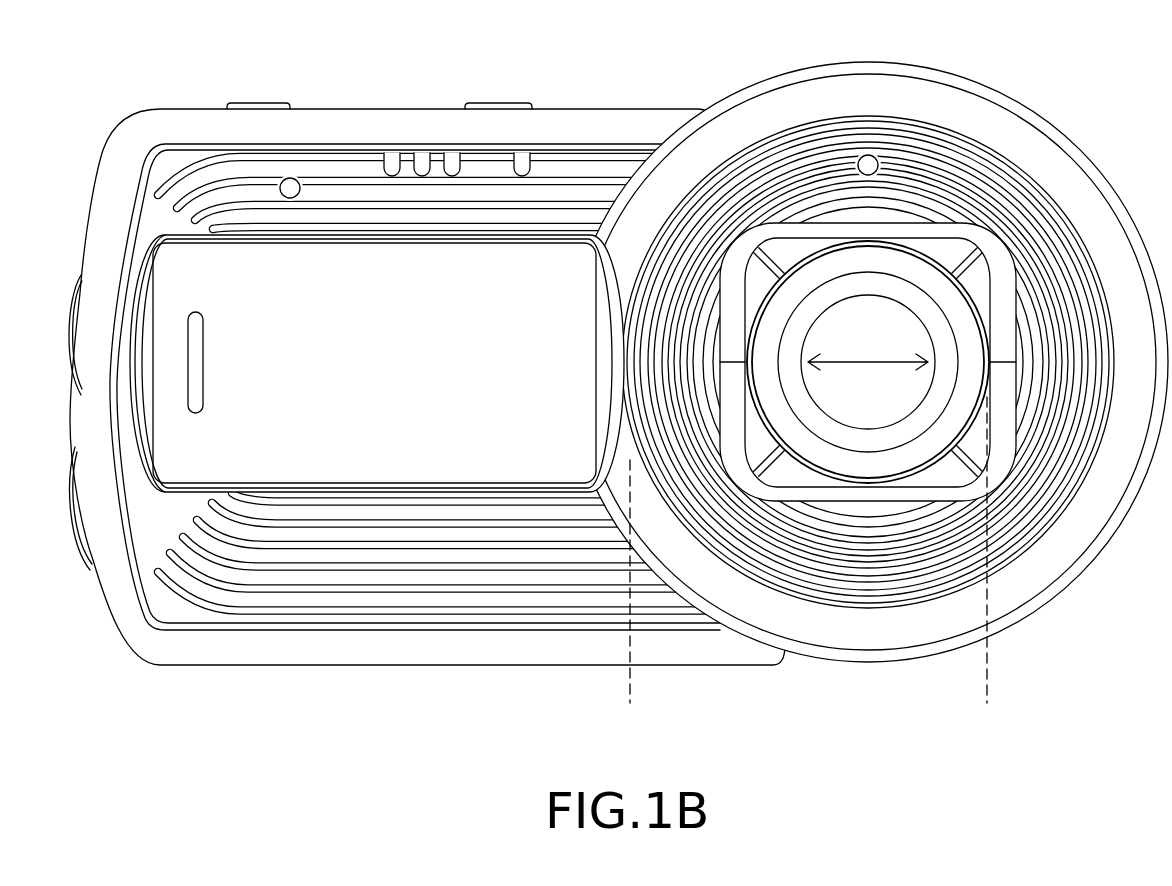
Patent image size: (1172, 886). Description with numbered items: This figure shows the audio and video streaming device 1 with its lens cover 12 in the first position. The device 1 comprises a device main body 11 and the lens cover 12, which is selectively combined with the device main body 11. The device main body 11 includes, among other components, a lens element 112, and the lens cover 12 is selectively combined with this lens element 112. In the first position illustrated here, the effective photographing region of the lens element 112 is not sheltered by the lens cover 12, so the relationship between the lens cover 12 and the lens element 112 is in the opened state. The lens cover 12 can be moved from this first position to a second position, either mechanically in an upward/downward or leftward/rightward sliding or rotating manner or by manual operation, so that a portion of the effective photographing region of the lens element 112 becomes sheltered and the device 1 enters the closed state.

The audio and video streaming device 1 is at (1064, 29).
The device main body 11 is at (390, 122).
The lens cover 12 is at (398, 435).
The lens element 112 is at (904, 335).